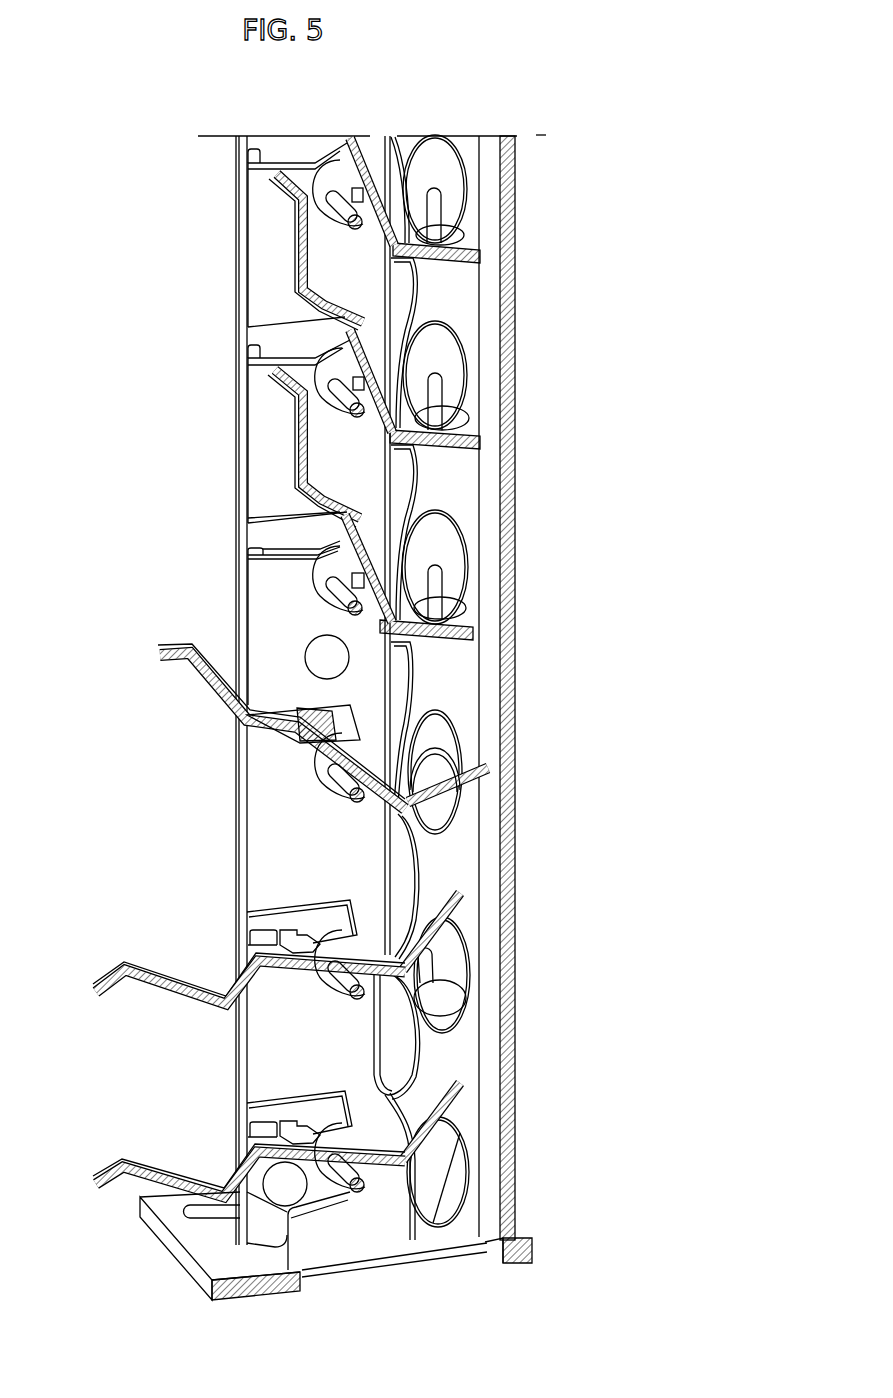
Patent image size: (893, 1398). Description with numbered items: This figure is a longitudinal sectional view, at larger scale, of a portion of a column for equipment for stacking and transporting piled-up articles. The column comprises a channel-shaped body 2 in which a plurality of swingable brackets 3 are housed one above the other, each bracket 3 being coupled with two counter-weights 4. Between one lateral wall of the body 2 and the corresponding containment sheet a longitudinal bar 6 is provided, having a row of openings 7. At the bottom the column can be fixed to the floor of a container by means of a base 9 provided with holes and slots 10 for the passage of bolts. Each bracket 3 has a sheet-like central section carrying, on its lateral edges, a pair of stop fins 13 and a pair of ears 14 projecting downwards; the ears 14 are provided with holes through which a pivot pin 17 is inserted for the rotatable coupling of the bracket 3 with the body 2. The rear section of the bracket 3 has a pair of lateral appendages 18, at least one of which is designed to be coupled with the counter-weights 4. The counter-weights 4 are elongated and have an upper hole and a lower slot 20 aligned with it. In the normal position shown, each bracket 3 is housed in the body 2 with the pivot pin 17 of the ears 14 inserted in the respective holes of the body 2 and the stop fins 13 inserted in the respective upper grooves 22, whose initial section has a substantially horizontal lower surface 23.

The channel-shaped body 2 is at (517, 312).
The swingable bracket 3 is at (294, 270).
The counter-weight 4 is at (386, 272).
The longitudinal bar 6 is at (484, 180).
The opening 7 is at (437, 142).
The base 9 is at (215, 1258).
The holes and slots 10 is at (190, 1216).
The stop fin 13 is at (345, 140).
The ear 14 is at (330, 195).
The pivot pin 17 is at (360, 230).
The lateral appendage 18 is at (450, 218).
The lower slot 20 is at (440, 190).
The upper groove 22 is at (265, 536).
The horizontal lower surface 23 is at (256, 167).